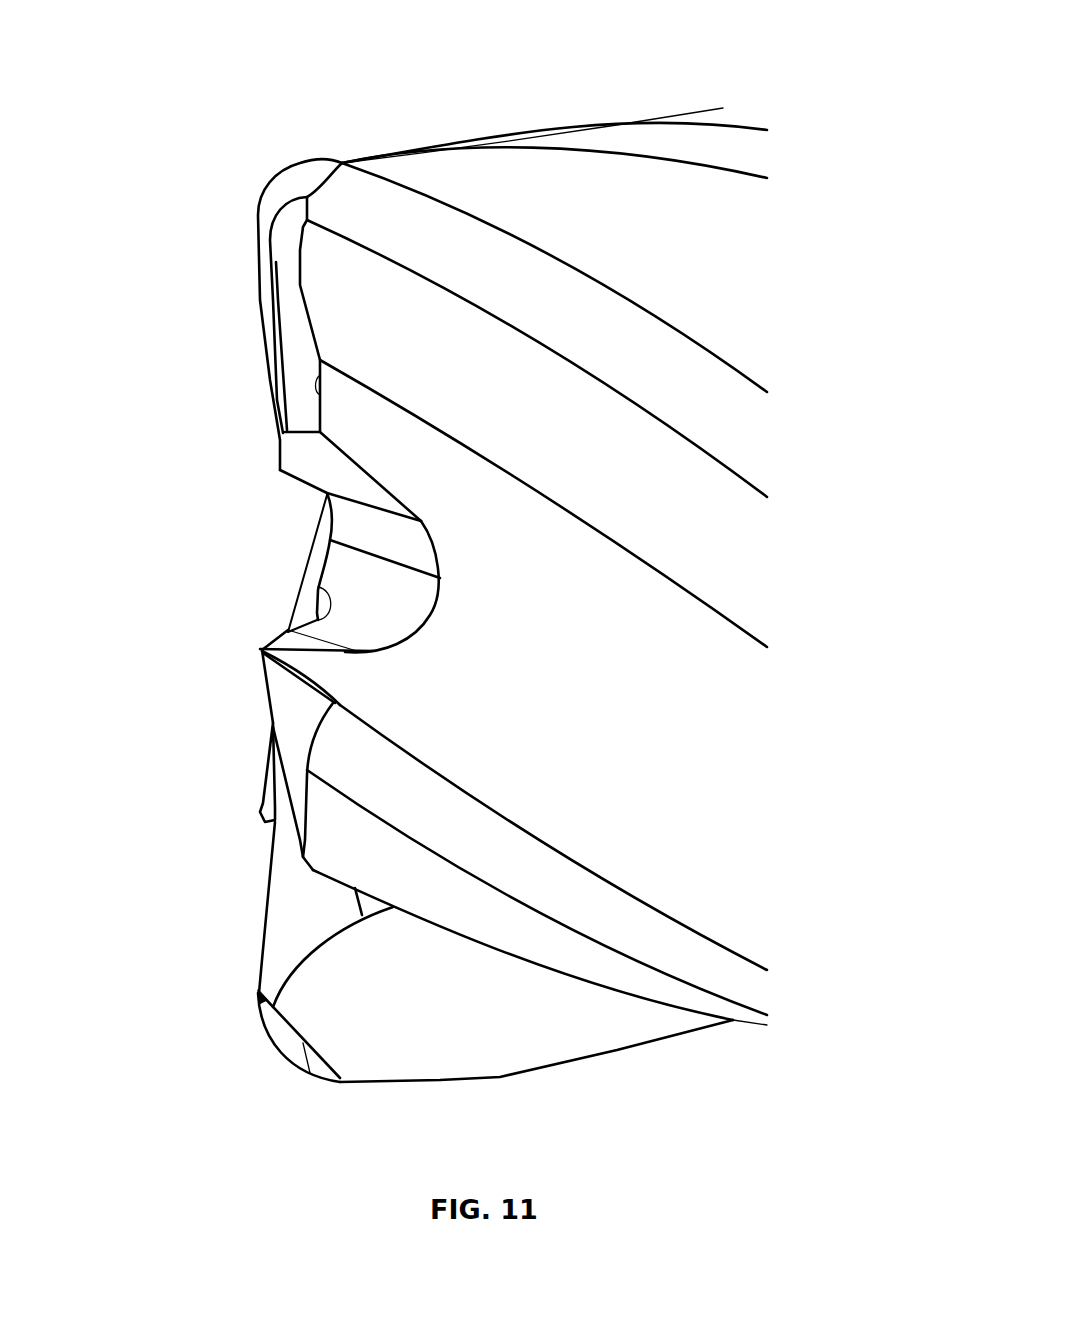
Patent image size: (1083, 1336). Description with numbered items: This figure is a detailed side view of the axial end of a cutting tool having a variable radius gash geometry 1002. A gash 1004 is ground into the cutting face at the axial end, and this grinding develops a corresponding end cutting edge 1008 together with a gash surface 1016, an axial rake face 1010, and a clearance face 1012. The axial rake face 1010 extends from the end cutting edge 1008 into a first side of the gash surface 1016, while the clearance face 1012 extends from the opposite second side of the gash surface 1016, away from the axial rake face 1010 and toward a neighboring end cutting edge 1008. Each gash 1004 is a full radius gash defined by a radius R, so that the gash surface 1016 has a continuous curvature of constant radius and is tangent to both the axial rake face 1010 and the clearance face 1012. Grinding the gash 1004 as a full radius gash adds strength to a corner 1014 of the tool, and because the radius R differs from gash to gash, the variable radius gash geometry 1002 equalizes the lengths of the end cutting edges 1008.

The variable radius gash geometry 1002 is at (130, 334).
The gash 1004 is at (281, 550).
The end cutting edge 1008 is at (268, 640).
The axial rake face 1010 is at (288, 632).
The clearance face 1012 is at (323, 463).
The corner 1014 is at (268, 176).
The gash surface 1016 is at (385, 610).
The radius R is at (440, 590).